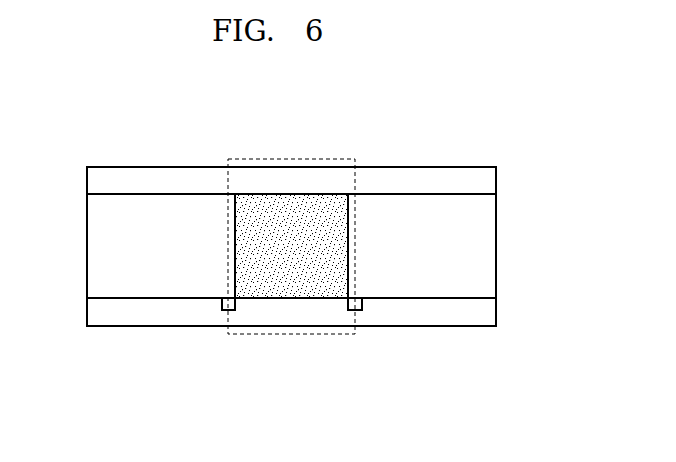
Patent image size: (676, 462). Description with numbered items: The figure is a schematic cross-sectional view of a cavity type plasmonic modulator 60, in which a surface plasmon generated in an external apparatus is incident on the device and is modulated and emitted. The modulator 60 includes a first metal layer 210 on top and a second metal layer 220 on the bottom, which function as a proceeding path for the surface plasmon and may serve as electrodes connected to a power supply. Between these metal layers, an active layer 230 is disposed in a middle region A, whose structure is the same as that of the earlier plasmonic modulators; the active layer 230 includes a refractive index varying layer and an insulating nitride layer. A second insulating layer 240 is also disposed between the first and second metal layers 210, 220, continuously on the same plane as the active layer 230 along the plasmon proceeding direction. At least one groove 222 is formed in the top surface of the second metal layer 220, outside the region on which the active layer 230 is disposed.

The cavity type plasmonic modulator 60 is at (67, 125).
The first metal layer 210 is at (493, 183).
The second metal layer 220 is at (493, 314).
The groove 222 is at (222, 310).
The active layer 230 is at (290, 290).
The second insulating layer 240 is at (135, 290).
The middle region A is at (292, 158).